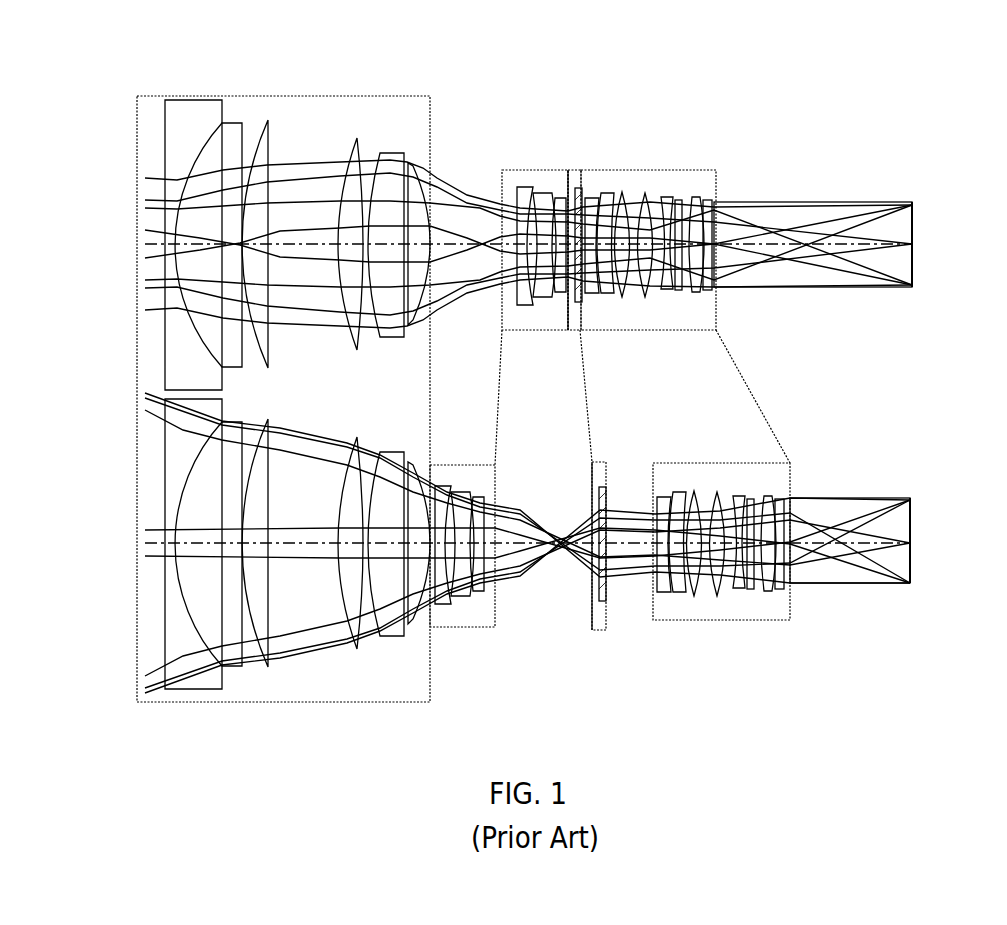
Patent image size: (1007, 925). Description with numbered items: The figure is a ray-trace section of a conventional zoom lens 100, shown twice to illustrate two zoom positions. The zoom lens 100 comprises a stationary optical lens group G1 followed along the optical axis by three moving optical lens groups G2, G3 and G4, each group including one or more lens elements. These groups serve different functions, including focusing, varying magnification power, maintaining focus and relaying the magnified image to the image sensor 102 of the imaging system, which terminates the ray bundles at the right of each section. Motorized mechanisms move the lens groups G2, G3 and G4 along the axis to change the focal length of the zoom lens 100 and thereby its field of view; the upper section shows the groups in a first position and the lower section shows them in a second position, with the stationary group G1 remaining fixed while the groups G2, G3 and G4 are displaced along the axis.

The zoom lens 100 is at (652, 96).
The image sensor 102 is at (912, 226).
The stationary optical lens group G1 is at (284, 399).
The moving optical lens group G2 is at (501, 405).
The moving optical lens group G3 is at (592, 407).
The moving optical lens group G4 is at (687, 403).